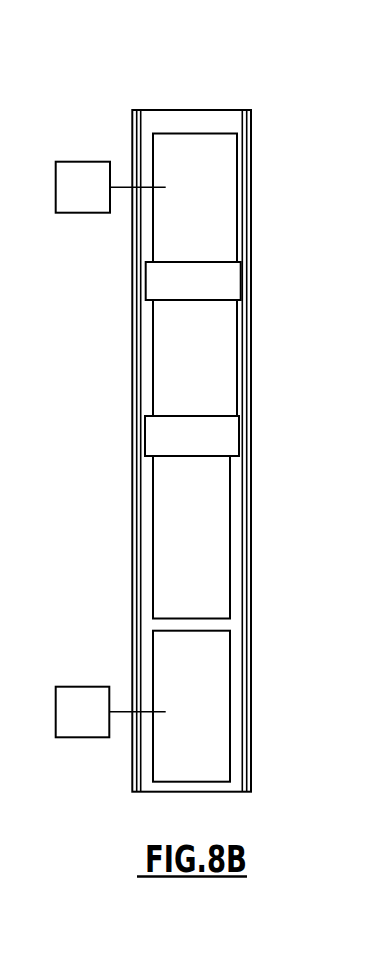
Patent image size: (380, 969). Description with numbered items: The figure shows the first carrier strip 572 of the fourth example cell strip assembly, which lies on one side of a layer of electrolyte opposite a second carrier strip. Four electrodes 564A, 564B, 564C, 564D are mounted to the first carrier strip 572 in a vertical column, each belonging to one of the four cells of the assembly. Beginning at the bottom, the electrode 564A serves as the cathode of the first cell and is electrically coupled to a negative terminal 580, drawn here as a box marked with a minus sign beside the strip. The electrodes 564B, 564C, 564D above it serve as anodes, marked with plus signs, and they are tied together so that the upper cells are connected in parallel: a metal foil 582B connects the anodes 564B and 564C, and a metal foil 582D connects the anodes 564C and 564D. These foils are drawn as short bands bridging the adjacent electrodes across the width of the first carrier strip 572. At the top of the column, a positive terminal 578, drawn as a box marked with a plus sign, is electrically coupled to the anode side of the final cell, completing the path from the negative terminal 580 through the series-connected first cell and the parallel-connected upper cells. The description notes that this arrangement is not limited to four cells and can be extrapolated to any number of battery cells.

The first carrier strip 572 is at (165, 110).
The electrode 564A is at (212, 666).
The electrode 564B is at (212, 497).
The electrode 564C is at (212, 330).
The electrode 564D is at (212, 226).
The metal foil 582B is at (161, 436).
The metal foil 582D is at (222, 279).
The positive terminal 578 is at (73, 162).
The negative terminal 580 is at (73, 687).